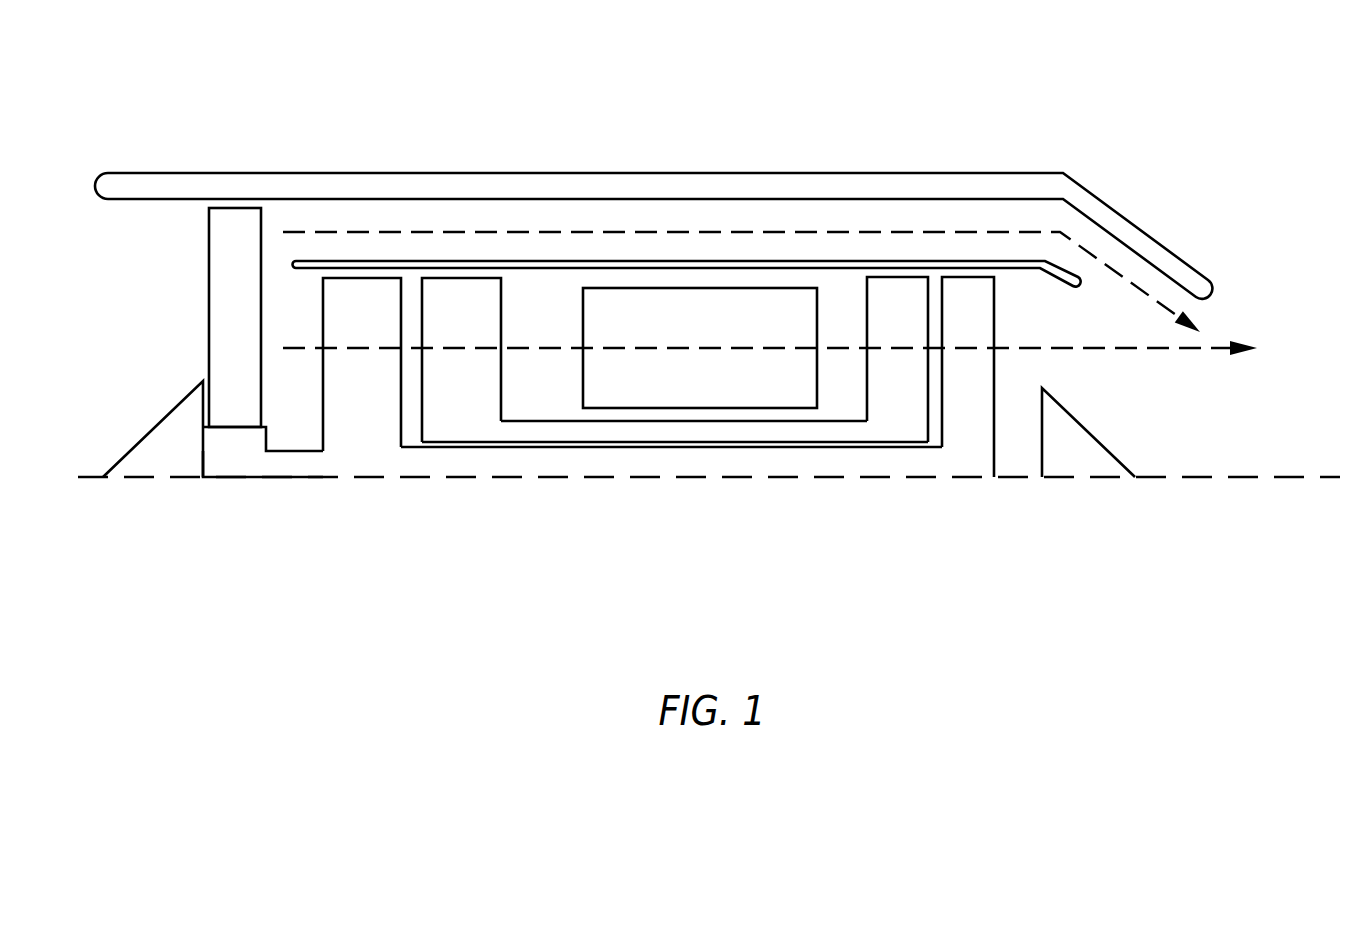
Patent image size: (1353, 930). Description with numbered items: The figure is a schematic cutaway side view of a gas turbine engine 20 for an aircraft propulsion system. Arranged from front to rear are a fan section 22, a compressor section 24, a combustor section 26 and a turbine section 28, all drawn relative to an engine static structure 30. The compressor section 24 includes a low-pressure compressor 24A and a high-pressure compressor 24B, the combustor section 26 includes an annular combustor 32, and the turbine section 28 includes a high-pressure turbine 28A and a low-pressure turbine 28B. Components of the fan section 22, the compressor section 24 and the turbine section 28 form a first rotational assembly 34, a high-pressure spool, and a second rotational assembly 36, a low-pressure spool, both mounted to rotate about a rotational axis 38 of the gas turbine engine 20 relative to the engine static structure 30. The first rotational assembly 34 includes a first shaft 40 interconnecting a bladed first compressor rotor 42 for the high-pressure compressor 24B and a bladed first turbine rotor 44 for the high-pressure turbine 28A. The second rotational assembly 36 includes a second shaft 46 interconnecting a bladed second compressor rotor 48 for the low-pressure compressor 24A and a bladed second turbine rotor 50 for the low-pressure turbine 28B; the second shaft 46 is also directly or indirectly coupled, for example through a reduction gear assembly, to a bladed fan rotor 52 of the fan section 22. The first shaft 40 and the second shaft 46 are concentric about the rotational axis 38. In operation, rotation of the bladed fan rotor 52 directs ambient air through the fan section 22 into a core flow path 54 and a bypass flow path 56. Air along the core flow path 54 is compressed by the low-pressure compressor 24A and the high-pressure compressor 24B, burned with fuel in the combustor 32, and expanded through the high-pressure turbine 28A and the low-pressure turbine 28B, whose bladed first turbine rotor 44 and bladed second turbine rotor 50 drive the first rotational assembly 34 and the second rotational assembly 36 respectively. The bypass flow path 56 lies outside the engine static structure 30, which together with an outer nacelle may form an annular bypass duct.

The gas turbine engine 20 is at (1166, 66).
The fan section 22 is at (97, 558).
The compressor section 24 is at (500, 558).
The low-pressure compressor 24A is at (310, 408).
The high-pressure compressor 24B is at (509, 404).
The combustor section 26 is at (818, 558).
The turbine section 28 is at (860, 558).
The high-pressure turbine 28A is at (855, 404).
The low-pressure turbine 28B is at (1006, 444).
The engine static structure 30 is at (783, 267).
The combustor 32 is at (687, 327).
The first rotational assembly 34 is at (460, 449).
The second rotational assembly 36 is at (899, 470).
The rotational axis 38 is at (1310, 478).
The first shaft 40 is at (678, 431).
The bladed first compressor rotor 42 is at (444, 327).
The bladed first turbine rotor 44 is at (882, 327).
The second shaft 46 is at (610, 462).
The bladed second compressor rotor 48 is at (347, 327).
The bladed second turbine rotor 50 is at (954, 327).
The bladed fan rotor 52 is at (218, 327).
The core flow path 54 is at (1150, 348).
The bypass flow path 56 is at (990, 230).